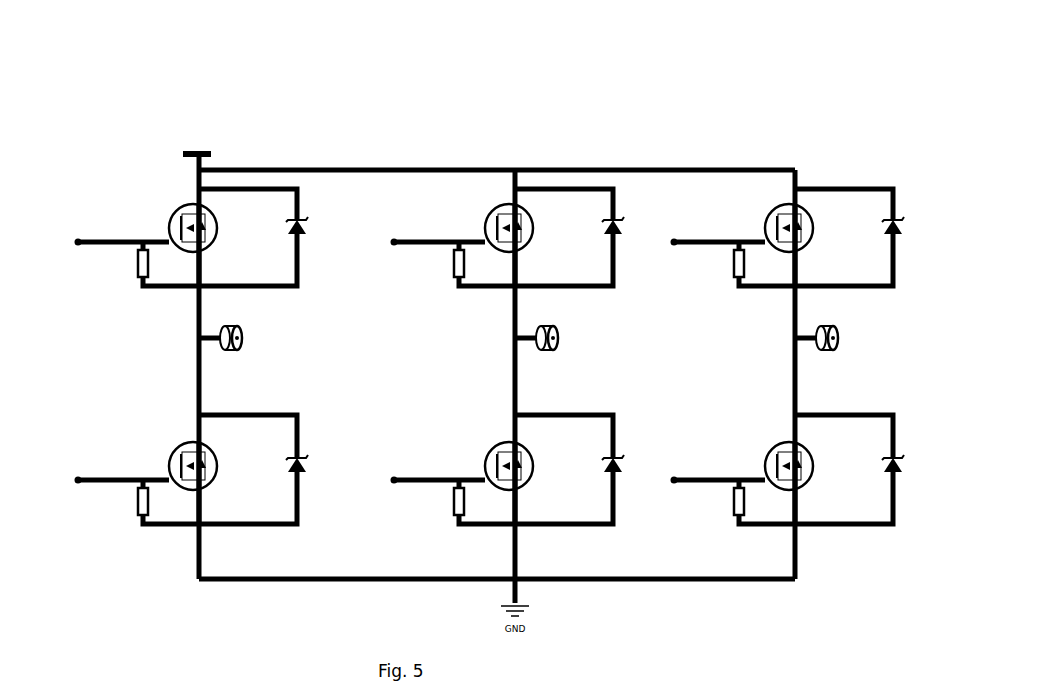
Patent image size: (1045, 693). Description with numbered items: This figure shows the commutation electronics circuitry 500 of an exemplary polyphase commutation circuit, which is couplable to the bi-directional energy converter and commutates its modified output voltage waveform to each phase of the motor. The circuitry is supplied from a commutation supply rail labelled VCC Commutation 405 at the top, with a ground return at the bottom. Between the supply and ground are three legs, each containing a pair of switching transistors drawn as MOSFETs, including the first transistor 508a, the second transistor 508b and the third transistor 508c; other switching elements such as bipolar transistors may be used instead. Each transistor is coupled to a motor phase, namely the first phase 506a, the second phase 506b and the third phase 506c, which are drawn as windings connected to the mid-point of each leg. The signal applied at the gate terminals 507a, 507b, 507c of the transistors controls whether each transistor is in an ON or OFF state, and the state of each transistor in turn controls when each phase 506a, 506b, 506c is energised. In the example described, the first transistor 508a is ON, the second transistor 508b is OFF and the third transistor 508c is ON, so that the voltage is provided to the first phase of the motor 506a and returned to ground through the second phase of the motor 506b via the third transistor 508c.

The commutation electronics circuitry 500 is at (97, 85).
The VCC commutation supply 405 is at (256, 138).
The gate terminal 507a is at (79, 233).
The gate terminal 507b is at (395, 237).
The gate terminal 507c is at (675, 237).
The first motor phase 506a is at (243, 335).
The second motor phase 506b is at (559, 333).
The third motor phase 506c is at (839, 333).
The first transistor 508a is at (183, 248).
The second transistor 508b is at (173, 443).
The third transistor 508c is at (490, 442).